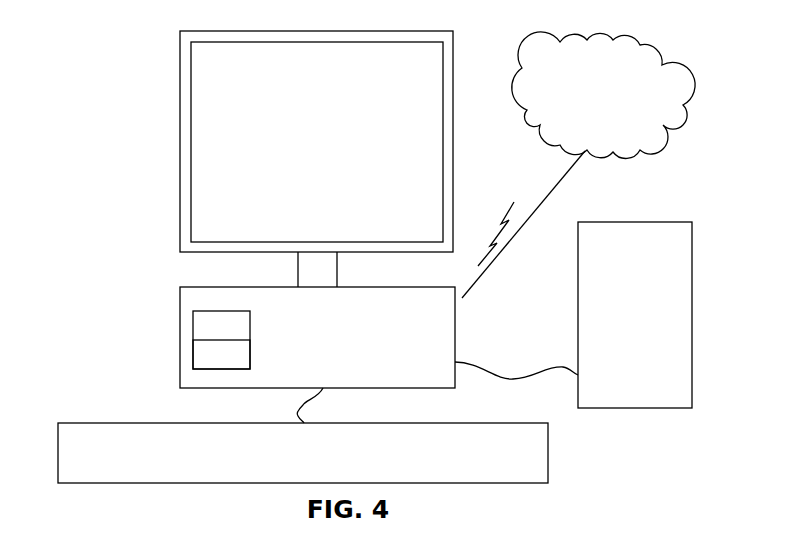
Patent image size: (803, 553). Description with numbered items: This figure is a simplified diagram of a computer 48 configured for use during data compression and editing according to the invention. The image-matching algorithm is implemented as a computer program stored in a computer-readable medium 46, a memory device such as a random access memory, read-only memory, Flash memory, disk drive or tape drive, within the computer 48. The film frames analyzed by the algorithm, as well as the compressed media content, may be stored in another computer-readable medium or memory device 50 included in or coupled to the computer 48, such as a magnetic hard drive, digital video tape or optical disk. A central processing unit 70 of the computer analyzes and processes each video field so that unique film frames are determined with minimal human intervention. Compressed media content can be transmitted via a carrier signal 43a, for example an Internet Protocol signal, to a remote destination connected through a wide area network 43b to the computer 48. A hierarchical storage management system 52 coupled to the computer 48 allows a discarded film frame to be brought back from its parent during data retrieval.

The computer 48 is at (112, 62).
The carrier signal 43a is at (503, 212).
The wide area network 43b is at (581, 107).
The computer-readable medium/memory device 50 is at (195, 325).
The computer-readable medium 46 is at (195, 355).
The central processing unit 70 is at (462, 332).
The hierarchical storage management system 52 is at (637, 408).